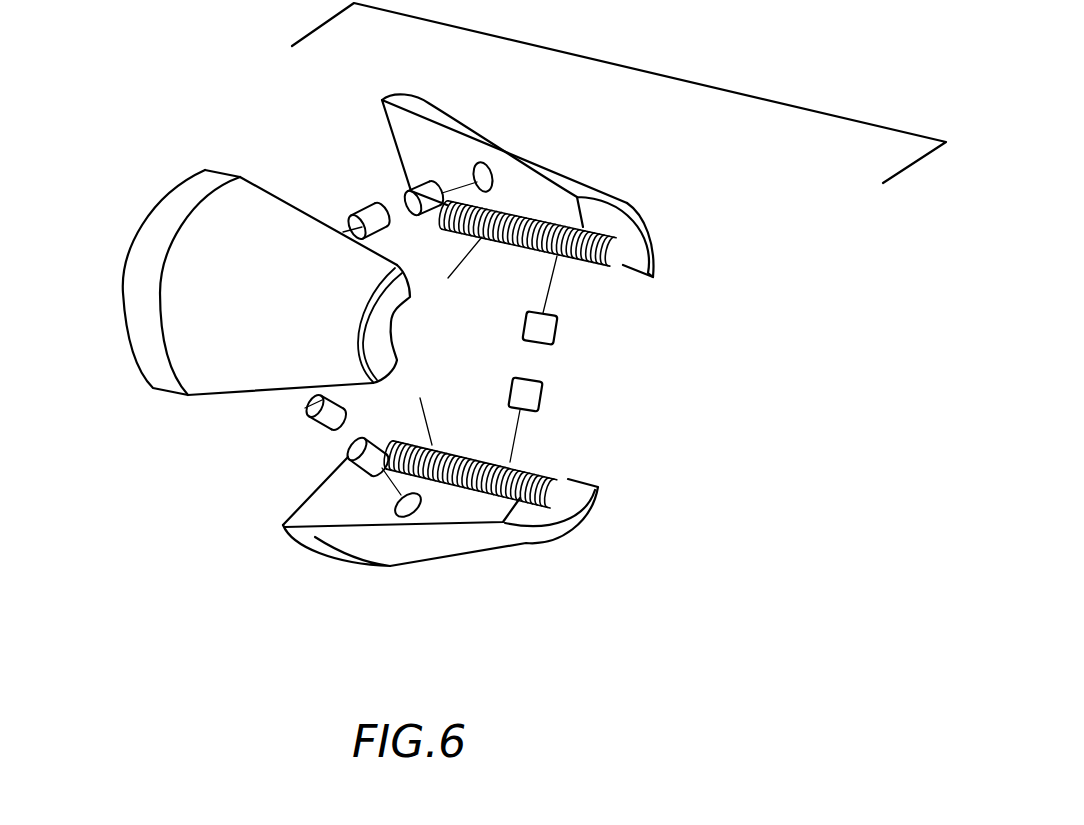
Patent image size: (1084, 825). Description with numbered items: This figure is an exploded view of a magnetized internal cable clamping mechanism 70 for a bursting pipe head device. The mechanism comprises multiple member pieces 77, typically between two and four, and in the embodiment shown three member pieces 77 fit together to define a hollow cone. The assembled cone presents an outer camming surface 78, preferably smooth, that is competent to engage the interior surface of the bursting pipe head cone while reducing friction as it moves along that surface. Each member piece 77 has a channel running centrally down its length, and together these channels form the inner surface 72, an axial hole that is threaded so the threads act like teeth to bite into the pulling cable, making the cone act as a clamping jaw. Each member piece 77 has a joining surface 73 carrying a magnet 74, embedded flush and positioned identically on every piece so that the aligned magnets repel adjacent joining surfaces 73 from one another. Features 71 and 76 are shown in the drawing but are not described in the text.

The cable clamping mechanism 70 is at (650, 73).
The lower housing half 71 is at (509, 500).
The inner surface 72 is at (626, 248).
The joining surface 73 is at (517, 173).
The magnet 74 is at (313, 430).
The housing edge 76 is at (282, 527).
The member piece 77 is at (642, 207).
The outer camming surface 78 is at (219, 297).